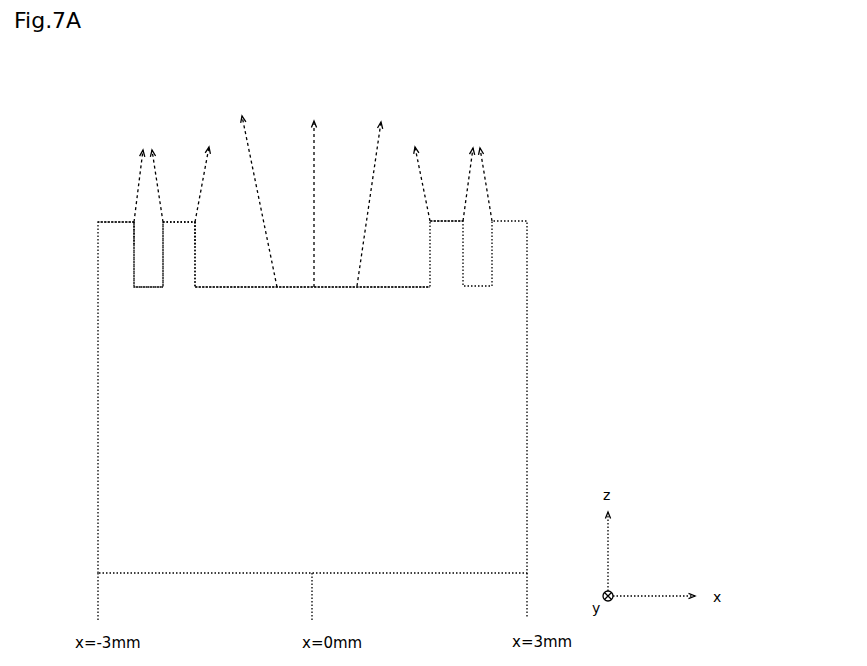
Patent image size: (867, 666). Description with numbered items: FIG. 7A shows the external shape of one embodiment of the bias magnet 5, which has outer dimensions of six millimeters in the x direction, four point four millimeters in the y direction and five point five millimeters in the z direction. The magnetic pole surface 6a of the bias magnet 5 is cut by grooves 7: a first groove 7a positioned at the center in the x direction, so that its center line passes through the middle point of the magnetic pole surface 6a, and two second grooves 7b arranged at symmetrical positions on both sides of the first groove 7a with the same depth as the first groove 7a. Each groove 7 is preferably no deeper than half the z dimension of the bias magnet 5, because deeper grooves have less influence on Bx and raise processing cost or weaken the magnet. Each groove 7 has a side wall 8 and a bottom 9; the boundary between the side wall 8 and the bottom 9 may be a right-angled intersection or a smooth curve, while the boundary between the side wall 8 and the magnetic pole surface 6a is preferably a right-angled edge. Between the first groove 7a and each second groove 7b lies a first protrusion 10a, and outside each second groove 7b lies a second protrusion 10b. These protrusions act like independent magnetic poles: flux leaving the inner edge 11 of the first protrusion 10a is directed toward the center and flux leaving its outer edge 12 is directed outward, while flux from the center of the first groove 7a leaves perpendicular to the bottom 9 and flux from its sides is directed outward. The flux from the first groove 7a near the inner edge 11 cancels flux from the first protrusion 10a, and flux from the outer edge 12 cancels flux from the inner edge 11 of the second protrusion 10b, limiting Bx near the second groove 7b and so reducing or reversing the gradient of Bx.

The bias magnet 5 is at (527, 360).
The magnetic pole surface 6a is at (445, 220).
The groove 7 is at (349, 191).
The first groove 7a is at (332, 245).
The second groove 7b is at (150, 270).
The side wall 8 is at (196, 272).
The bottom 9 is at (233, 288).
The first protrusion 10a is at (178, 220).
The second protrusion 10b is at (117, 220).
The inner edge 11 is at (133, 220).
The outer edge 12 is at (148, 238).